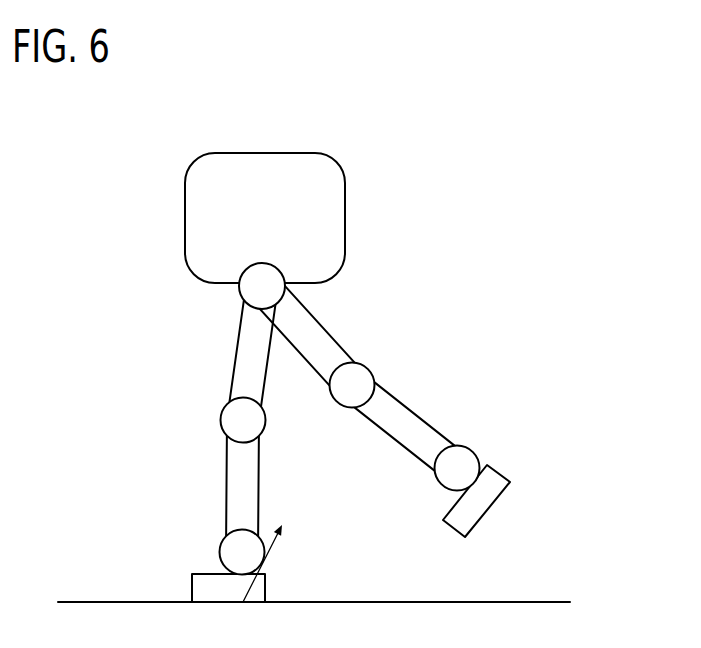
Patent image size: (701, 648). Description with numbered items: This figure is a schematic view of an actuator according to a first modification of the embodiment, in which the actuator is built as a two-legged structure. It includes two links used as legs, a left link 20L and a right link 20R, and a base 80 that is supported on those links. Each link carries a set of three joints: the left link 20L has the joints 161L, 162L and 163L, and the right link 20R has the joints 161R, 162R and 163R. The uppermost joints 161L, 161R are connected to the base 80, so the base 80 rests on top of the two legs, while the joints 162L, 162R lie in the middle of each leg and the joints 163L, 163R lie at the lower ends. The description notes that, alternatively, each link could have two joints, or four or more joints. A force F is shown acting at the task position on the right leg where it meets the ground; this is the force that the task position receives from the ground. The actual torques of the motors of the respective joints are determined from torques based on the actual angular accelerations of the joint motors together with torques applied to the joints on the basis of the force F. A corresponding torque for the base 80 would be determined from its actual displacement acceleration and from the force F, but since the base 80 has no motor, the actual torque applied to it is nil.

The base 80 is at (333, 218).
The joint 161L is at (258, 295).
The joint 161R is at (262, 286).
The link 20R is at (228, 443).
The link 20L is at (393, 406).
The joint 162R is at (247, 418).
The joint 162L is at (358, 370).
The joint 163R is at (205, 566).
The joint 163L is at (458, 457).
The force F is at (267, 550).